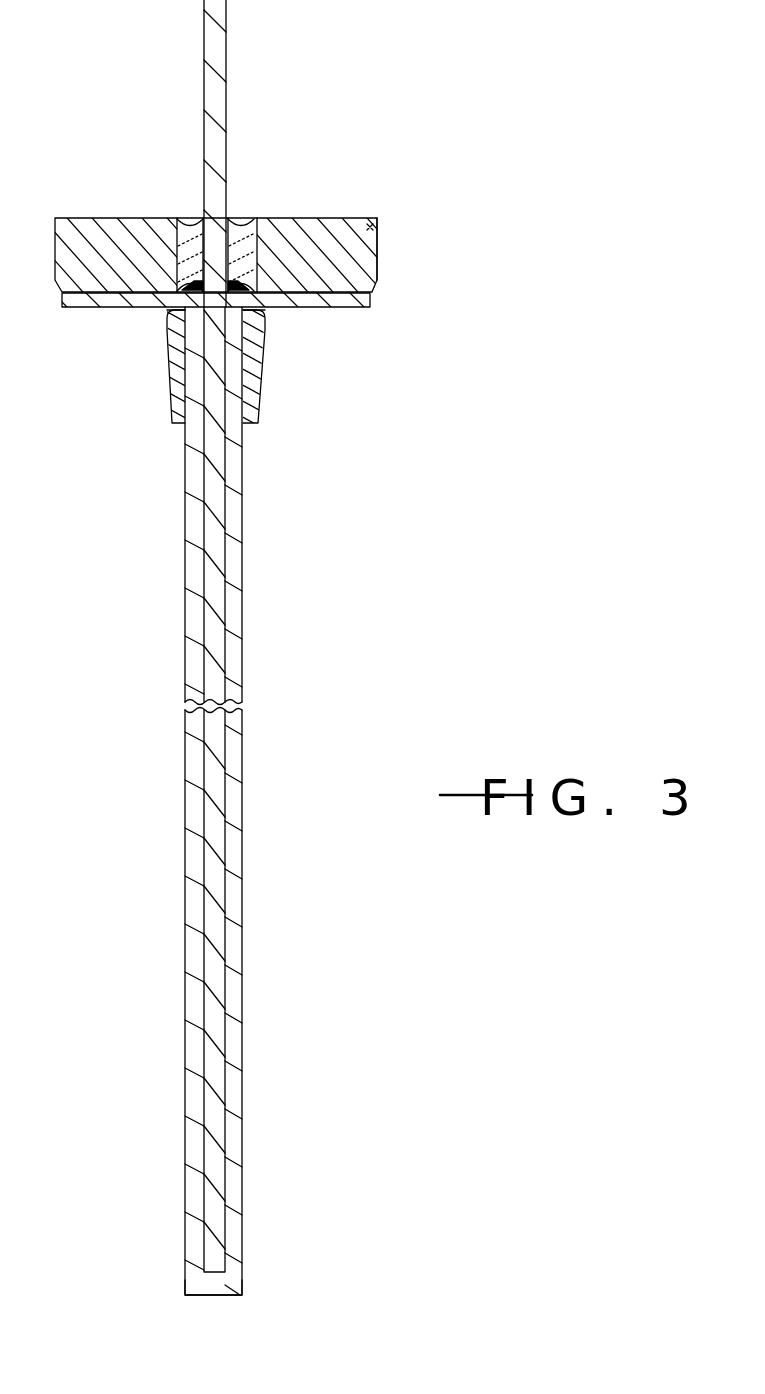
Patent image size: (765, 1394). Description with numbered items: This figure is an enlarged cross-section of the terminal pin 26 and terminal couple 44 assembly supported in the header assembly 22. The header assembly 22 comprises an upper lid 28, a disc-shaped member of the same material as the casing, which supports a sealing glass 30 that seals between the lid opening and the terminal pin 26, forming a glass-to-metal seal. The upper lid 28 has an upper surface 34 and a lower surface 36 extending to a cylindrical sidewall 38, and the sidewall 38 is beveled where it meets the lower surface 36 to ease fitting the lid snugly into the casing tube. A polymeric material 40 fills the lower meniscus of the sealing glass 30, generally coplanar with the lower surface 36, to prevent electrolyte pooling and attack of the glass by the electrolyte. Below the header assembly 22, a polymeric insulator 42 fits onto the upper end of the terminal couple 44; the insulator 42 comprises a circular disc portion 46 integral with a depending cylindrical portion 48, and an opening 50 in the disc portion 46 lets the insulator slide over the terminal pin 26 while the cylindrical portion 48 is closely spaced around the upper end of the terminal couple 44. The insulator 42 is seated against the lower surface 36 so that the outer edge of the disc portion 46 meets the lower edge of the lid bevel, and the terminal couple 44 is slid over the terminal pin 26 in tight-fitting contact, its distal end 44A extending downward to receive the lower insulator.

The header assembly 22 is at (235, 260).
The terminal pin 26 is at (228, 77).
The upper lid 28 is at (377, 220).
The sealing glass 30 is at (243, 228).
The upper surface 34 is at (103, 214).
The lower surface 36 is at (106, 303).
The cylindrical sidewall 38 is at (378, 253).
The polymeric material 40 is at (275, 258).
The polymeric insulator 42 is at (301, 370).
The terminal couple 44 is at (243, 850).
The distal end 44A is at (242, 1272).
The circular disc portion 46 is at (343, 312).
The depending cylindrical portion 48 is at (257, 387).
The opening 50 is at (182, 295).